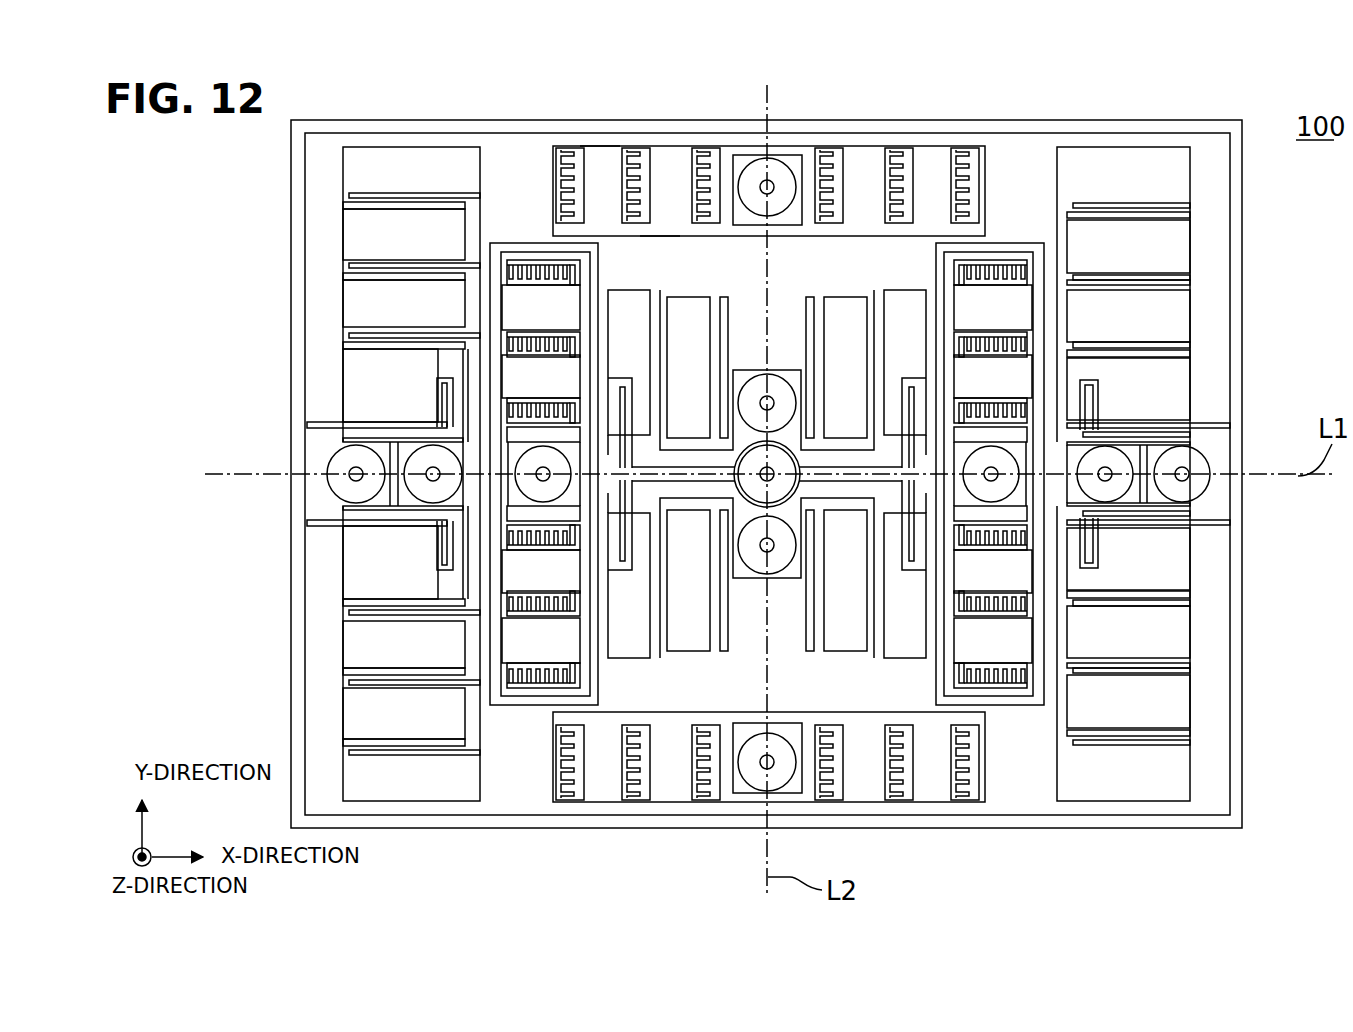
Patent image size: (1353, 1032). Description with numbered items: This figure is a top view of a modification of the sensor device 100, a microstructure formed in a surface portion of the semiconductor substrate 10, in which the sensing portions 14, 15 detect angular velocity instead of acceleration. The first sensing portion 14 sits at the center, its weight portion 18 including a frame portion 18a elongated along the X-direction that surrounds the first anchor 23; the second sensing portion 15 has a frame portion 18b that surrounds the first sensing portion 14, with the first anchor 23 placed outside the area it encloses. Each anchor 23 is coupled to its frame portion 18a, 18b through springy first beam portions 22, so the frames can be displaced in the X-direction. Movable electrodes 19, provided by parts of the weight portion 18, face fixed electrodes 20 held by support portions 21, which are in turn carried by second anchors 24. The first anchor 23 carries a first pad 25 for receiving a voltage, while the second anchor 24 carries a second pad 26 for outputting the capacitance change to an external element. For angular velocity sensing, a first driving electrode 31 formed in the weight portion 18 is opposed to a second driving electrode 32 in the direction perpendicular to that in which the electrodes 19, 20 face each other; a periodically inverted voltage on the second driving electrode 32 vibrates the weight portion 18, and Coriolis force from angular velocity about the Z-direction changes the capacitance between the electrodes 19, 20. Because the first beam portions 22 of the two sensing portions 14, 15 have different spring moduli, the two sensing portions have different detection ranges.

The semiconductor substrate 10 is at (1185, 119).
The sensor device 100 is at (1321, 127).
The first sensing portion 14 is at (1015, 236).
The second sensing portion 15 is at (1133, 130).
The weight portion 18 is at (1027, 246).
The frame portion 18a is at (655, 273).
The frame portion 18b is at (600, 146).
The movable electrode 19 is at (425, 207).
The fixed electrode 20 is at (452, 197).
The support portion 21 is at (864, 443).
The first beam portion 22 is at (392, 422).
The first anchor 23 is at (692, 467).
The second anchor 24 is at (1117, 455).
The first pad 25 is at (770, 481).
The second pad 26 is at (1108, 478).
The first driving electrode 31 is at (1037, 271).
The second driving electrode 32 is at (1030, 278).